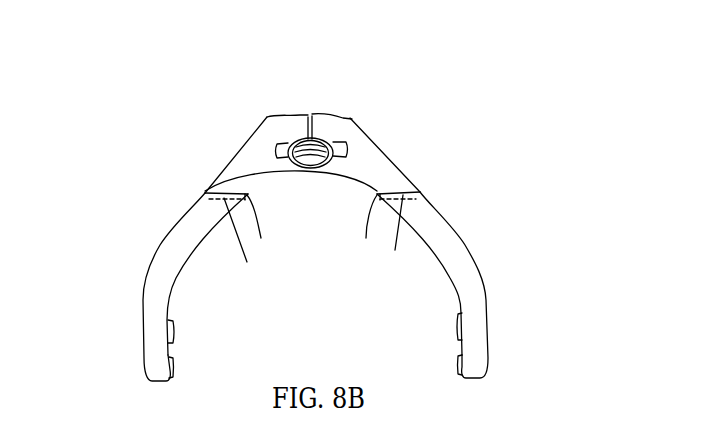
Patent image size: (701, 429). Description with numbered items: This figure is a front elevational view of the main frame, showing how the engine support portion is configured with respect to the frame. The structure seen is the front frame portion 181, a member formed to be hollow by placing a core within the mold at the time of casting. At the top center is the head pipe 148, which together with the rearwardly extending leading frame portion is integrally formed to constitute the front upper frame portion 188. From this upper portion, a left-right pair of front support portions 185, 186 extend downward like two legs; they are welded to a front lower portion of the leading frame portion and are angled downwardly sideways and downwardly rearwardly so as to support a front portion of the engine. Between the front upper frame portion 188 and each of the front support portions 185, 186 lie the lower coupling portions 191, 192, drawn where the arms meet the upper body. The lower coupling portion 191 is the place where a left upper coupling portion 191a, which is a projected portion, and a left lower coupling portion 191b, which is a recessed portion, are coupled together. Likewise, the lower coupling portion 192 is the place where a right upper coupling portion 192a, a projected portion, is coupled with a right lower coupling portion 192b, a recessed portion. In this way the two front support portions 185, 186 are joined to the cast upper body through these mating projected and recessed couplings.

The head pipe 148 is at (345, 131).
The front frame portion 181 is at (256, 136).
The front upper frame portion 188 is at (388, 154).
The lower coupling portion 192 is at (203, 192).
The lower coupling portion 191 is at (421, 191).
The front support portion 186 is at (153, 272).
The front support portion 185 is at (473, 263).
The right lower coupling portion 192b is at (278, 229).
The right upper coupling portion 192a is at (247, 262).
The left lower coupling portion 191b is at (351, 230).
The left upper coupling portion 191a is at (395, 250).